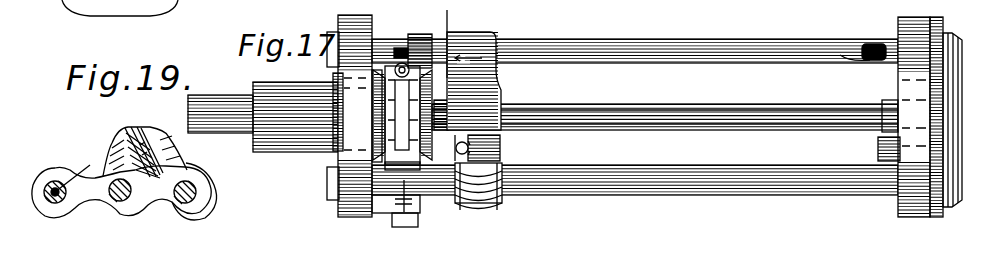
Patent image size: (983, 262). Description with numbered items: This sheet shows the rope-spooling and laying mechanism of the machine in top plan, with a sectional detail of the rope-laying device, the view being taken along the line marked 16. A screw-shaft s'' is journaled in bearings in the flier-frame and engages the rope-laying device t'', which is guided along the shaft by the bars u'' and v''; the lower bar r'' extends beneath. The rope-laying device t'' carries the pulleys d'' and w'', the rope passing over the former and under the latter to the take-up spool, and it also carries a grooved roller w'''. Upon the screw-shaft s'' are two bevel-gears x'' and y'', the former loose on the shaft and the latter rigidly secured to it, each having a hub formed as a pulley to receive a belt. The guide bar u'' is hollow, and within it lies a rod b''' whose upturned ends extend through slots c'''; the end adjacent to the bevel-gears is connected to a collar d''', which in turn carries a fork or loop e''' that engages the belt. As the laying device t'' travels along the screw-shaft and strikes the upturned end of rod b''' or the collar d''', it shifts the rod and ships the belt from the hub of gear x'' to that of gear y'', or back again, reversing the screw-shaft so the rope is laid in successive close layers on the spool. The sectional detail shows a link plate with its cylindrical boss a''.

In FIG. 19, the cylindrical boss a'' is at (145, 140).
In FIG. 19, the rod b''' is at (81, 170).
In FIG. 17, the rod b''' is at (846, 33).
In FIG. 17, the slots c''' is at (633, 32).
In FIG. 17, the pulley d'' is at (503, 148).
In FIG. 17, the collar d''' is at (418, 37).
In FIG. 17, the fork or loop e''' is at (442, 85).
In FIG. 17, the lower guide rod r'' is at (635, 169).
In FIG. 19, the screw-shaft s'' is at (110, 205).
In FIG. 17, the screw-shaft s'' is at (665, 106).
In FIG. 17, the rope-laying device t'' is at (489, 81).
In FIG. 19, the guide bar u'' is at (54, 174).
In FIG. 17, the guide bar u'' is at (635, 38).
In FIG. 19, the guide bar v'' is at (209, 191).
In FIG. 19, the pulley w'' is at (130, 185).
In FIG. 17, the grooved roller w''' is at (501, 189).
In FIG. 17, the bevel-gear x'' is at (280, 116).
In FIG. 17, the bevel-gear y'' is at (484, 70).
In FIG. 17, the section line 16- 16 is at (414, 114).